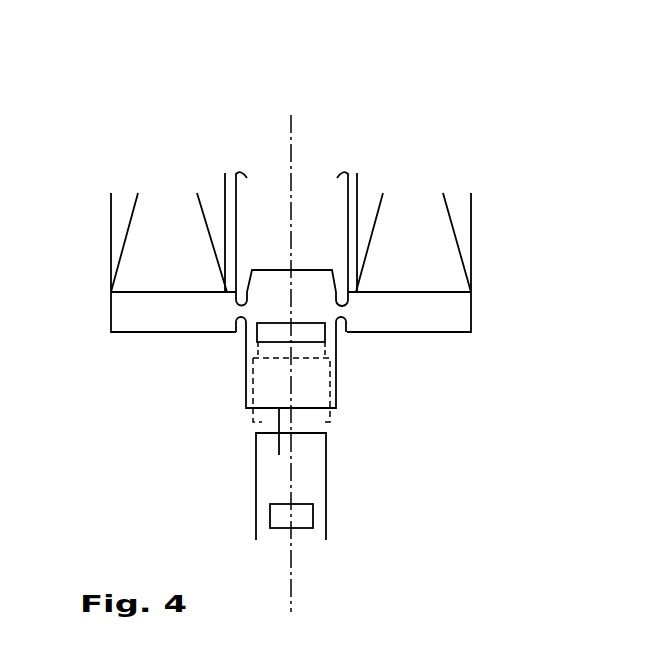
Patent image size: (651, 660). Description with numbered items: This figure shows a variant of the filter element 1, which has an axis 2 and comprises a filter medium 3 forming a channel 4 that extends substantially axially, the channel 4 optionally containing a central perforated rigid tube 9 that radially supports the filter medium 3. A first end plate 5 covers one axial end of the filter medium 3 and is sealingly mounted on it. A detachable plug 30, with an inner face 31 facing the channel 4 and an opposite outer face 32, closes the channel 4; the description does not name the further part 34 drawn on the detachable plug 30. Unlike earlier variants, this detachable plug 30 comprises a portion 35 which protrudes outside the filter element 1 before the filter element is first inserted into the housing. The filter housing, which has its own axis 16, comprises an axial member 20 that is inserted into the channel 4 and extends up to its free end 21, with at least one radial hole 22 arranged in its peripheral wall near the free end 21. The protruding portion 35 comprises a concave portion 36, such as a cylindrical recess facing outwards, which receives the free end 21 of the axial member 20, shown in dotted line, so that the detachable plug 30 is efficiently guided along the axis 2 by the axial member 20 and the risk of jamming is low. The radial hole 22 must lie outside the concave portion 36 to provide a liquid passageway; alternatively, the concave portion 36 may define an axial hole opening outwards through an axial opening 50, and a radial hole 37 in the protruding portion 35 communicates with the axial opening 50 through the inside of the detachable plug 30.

The filter element 1 is at (144, 167).
The axis 2 is at (291, 133).
The filter medium 3 is at (160, 250).
The channel 4 is at (257, 218).
The first end plate 5 is at (132, 318).
The central perforated rigid tube 9 is at (357, 180).
The axis 16 is at (291, 595).
The axial member 20 is at (253, 422).
The free end 21 is at (302, 432).
The radial hole 22 is at (302, 517).
The detachable plug 30 is at (308, 285).
The inner face 31 is at (316, 270).
The outer face 32 is at (336, 408).
The insert 34 is at (308, 333).
The protruding portion 35 is at (245, 348).
The concave portion 36 is at (245, 378).
The radial hole 37 is at (340, 327).
The axial opening 50 is at (279, 455).